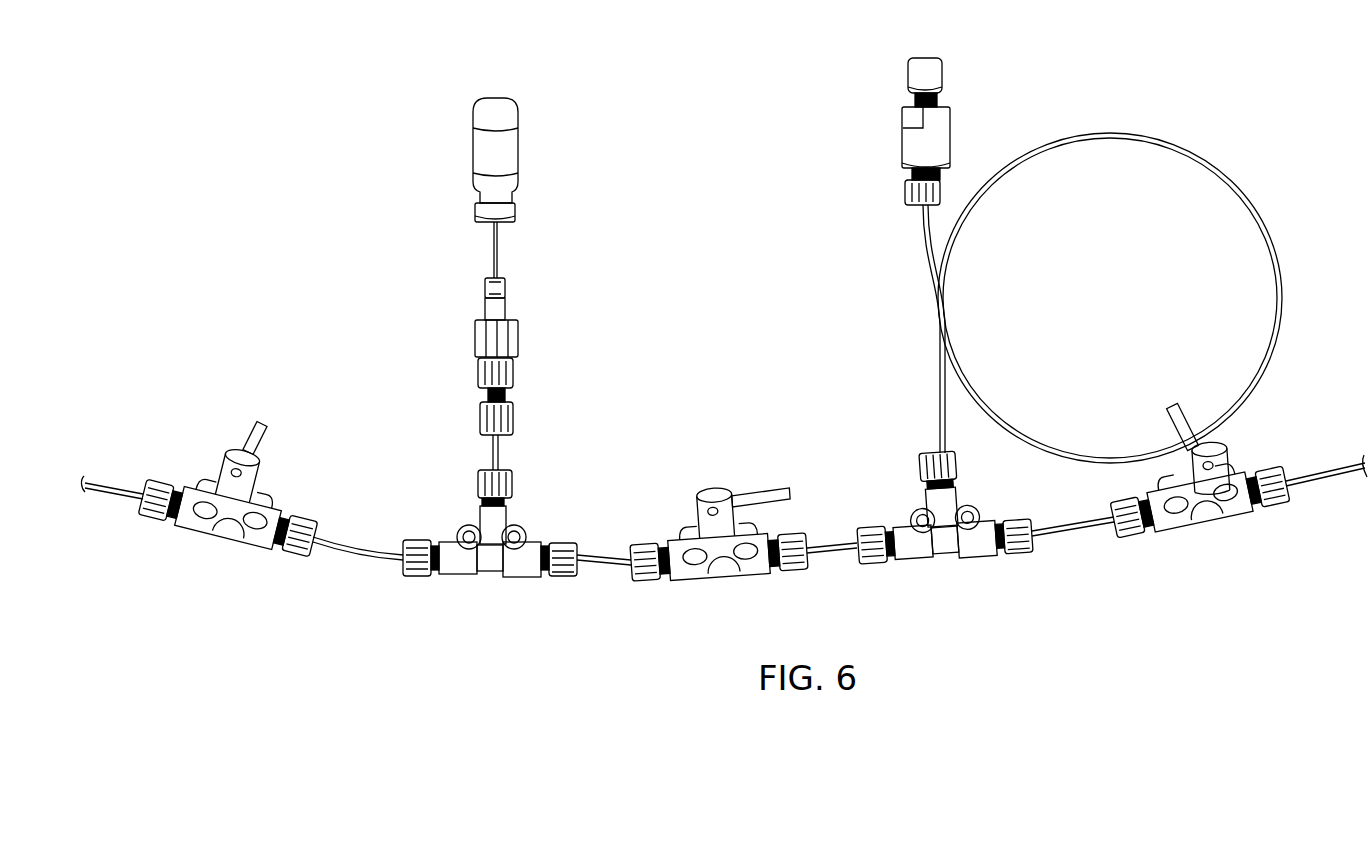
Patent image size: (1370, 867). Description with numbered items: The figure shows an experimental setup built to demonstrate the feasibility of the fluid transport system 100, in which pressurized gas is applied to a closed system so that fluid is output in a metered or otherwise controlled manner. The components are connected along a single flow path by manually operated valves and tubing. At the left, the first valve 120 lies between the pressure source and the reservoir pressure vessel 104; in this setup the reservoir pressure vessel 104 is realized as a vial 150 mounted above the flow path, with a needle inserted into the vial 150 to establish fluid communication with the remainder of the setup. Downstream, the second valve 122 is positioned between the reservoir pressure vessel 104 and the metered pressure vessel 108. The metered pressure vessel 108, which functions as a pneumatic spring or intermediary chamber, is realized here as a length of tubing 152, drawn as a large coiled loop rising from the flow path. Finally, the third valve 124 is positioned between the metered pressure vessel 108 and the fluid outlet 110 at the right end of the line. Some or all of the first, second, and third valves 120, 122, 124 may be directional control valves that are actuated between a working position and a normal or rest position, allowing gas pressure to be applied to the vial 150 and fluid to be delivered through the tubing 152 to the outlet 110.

The fluid transport system 100 is at (262, 114).
The reservoir pressure vessel 104 is at (460, 114).
The metered pressure vessel 108 is at (898, 289).
The fluid outlet 110 is at (1316, 440).
The first valve 120 is at (240, 549).
The second valve 122 is at (718, 494).
The third valve 124 is at (1204, 514).
The vial 150 is at (505, 113).
The tubing 152 is at (1197, 150).